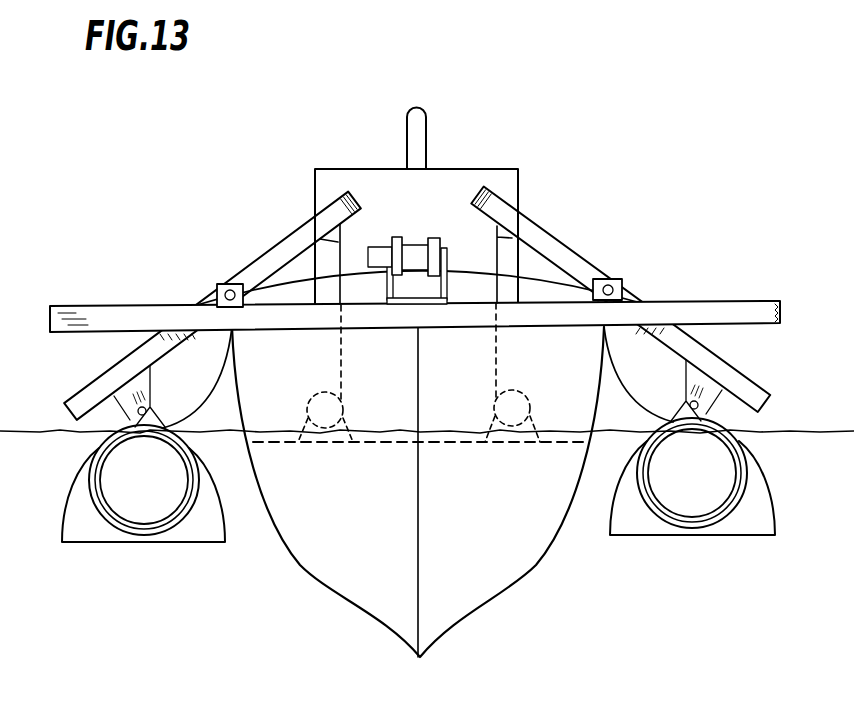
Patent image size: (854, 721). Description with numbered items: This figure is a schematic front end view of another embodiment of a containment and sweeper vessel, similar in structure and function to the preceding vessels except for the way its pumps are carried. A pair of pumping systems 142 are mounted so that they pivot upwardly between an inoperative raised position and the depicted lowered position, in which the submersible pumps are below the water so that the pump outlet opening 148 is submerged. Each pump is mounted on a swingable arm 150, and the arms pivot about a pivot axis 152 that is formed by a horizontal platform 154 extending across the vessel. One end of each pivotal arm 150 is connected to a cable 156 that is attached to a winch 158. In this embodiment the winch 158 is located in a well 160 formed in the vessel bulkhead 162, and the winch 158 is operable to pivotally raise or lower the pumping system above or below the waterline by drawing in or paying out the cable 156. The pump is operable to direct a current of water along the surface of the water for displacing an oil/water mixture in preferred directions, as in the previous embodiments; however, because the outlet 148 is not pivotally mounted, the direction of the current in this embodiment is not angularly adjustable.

The pumping system 142 is at (397, 419).
The pump outlet opening 148 is at (191, 543).
The swingable arm 150 is at (417, 304).
The pivot axis 152 is at (212, 283).
The horizontal platform 154 is at (78, 305).
The cable 156 is at (318, 215).
The winch 158 is at (310, 398).
The well 160 is at (403, 375).
The vessel bulkhead 162 is at (428, 447).